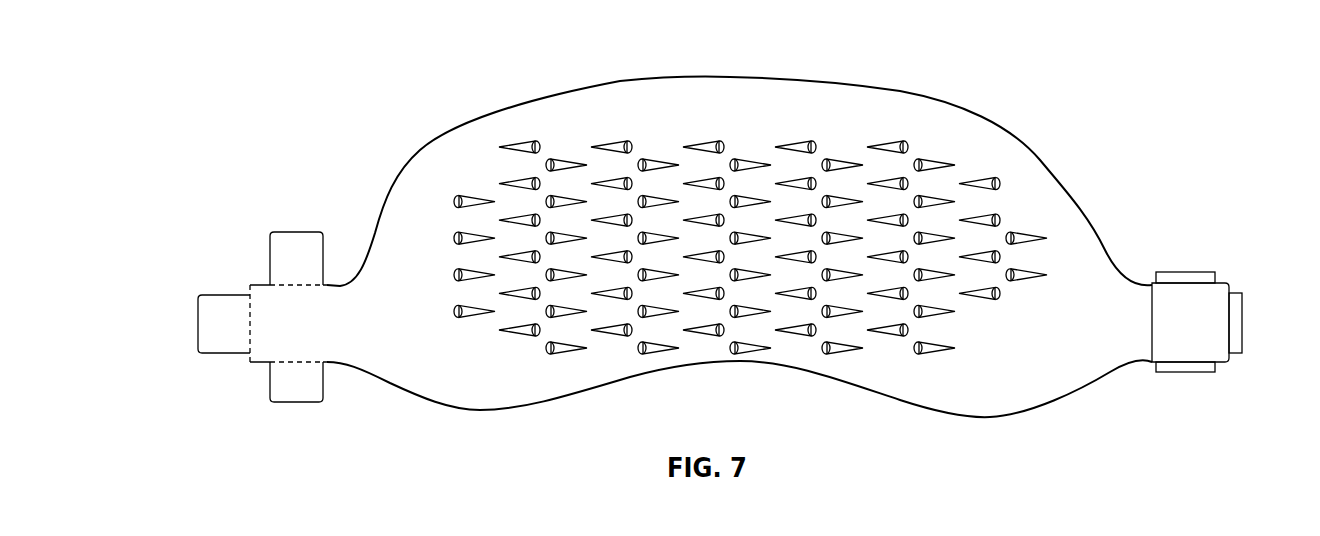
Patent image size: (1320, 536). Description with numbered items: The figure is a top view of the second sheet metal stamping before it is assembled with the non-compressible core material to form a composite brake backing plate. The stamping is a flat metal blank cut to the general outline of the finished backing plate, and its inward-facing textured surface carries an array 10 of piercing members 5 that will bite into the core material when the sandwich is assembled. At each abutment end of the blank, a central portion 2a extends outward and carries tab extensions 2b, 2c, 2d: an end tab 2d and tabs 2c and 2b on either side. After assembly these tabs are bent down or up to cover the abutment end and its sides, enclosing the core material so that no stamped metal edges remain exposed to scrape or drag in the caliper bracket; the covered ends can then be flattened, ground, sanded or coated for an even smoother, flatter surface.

The array 10 is at (848, 102).
The piercing member 5 is at (917, 162).
The connector body 2a is at (285, 327).
The tab extension 2b is at (294, 395).
The tab extension 2c is at (292, 245).
The tab extension 2d is at (210, 317).